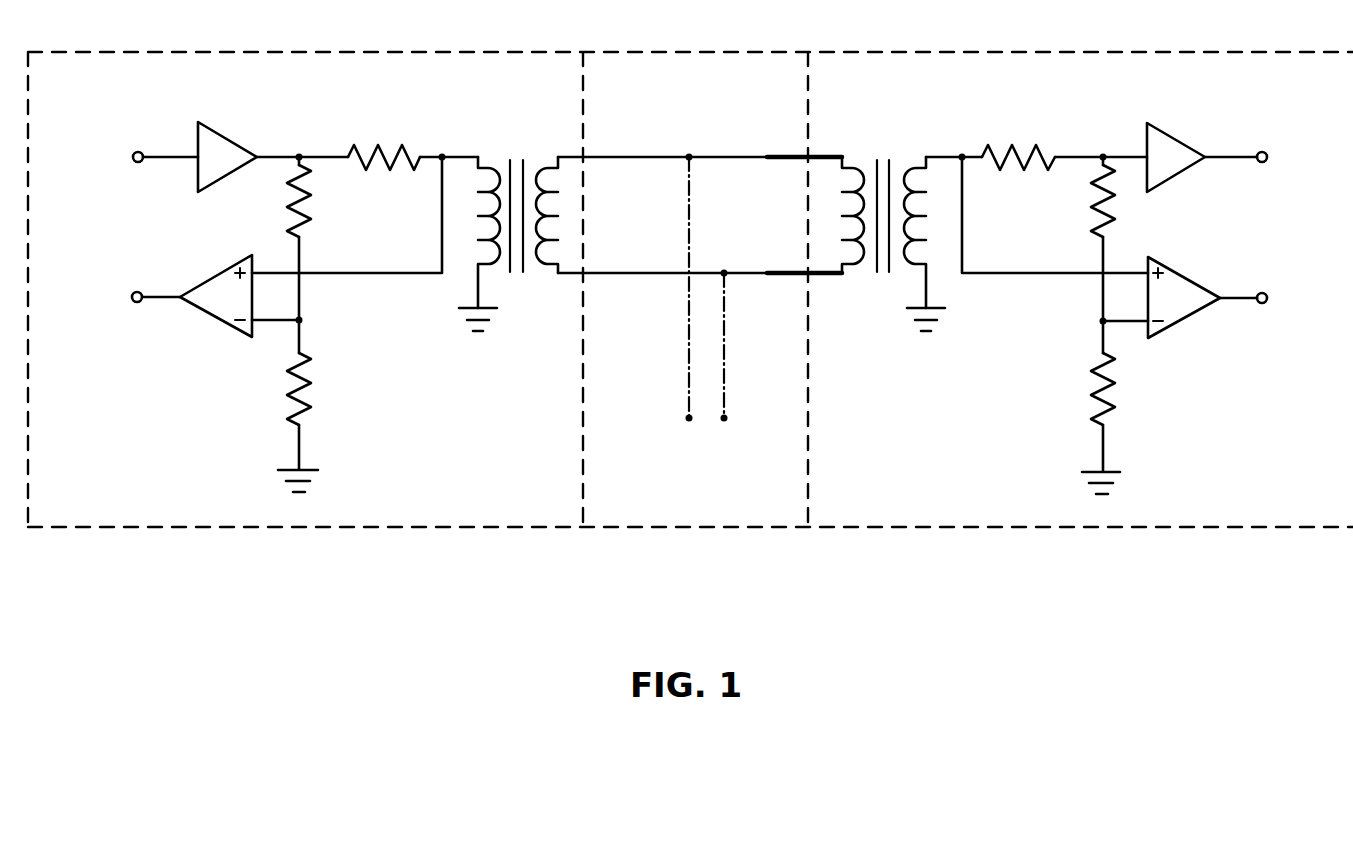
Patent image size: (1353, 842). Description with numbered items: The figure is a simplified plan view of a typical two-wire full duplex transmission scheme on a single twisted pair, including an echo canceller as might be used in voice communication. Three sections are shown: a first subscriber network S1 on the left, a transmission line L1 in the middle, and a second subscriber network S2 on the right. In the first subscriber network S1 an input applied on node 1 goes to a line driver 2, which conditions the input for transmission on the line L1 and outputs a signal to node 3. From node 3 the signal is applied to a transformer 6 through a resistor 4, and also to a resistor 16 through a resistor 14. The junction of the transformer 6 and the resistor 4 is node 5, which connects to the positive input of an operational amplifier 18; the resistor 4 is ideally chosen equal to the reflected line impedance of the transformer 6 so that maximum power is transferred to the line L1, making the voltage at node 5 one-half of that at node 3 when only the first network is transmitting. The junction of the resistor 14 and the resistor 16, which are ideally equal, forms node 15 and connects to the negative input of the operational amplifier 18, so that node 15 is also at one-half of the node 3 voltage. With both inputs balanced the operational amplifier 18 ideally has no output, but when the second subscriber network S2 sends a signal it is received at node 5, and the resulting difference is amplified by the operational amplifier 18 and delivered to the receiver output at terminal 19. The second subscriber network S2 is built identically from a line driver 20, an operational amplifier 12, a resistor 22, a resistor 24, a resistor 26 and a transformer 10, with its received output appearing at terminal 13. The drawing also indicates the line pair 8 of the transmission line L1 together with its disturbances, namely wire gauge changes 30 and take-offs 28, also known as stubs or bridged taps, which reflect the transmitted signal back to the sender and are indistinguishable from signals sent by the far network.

The node 1 is at (132, 153).
The line driver 2 is at (222, 132).
The node 3 is at (300, 155).
The resistor 4 is at (413, 143).
The node 5 is at (442, 157).
The transformer 6 is at (517, 277).
The transmission line 8 is at (635, 157).
The transformer 10 is at (883, 277).
The operational amplifier 12 is at (1173, 266).
The output terminal 13 is at (1267, 293).
The resistor 14 is at (320, 259).
The node 15 is at (300, 319).
The resistor 16 is at (315, 422).
The operational amplifier 18 is at (212, 280).
The output terminal 19 is at (131, 293).
The line driver 20 is at (1172, 138).
The resistor 22 is at (1018, 142).
The resistor 24 is at (1081, 254).
The resistor 26 is at (1079, 423).
The take-offs 28 is at (706, 308).
The wire gauge changes 30 is at (767, 157).
The first subscriber network S1 is at (317, 527).
The transmission line L1 is at (705, 527).
The second subscriber network S2 is at (1098, 527).